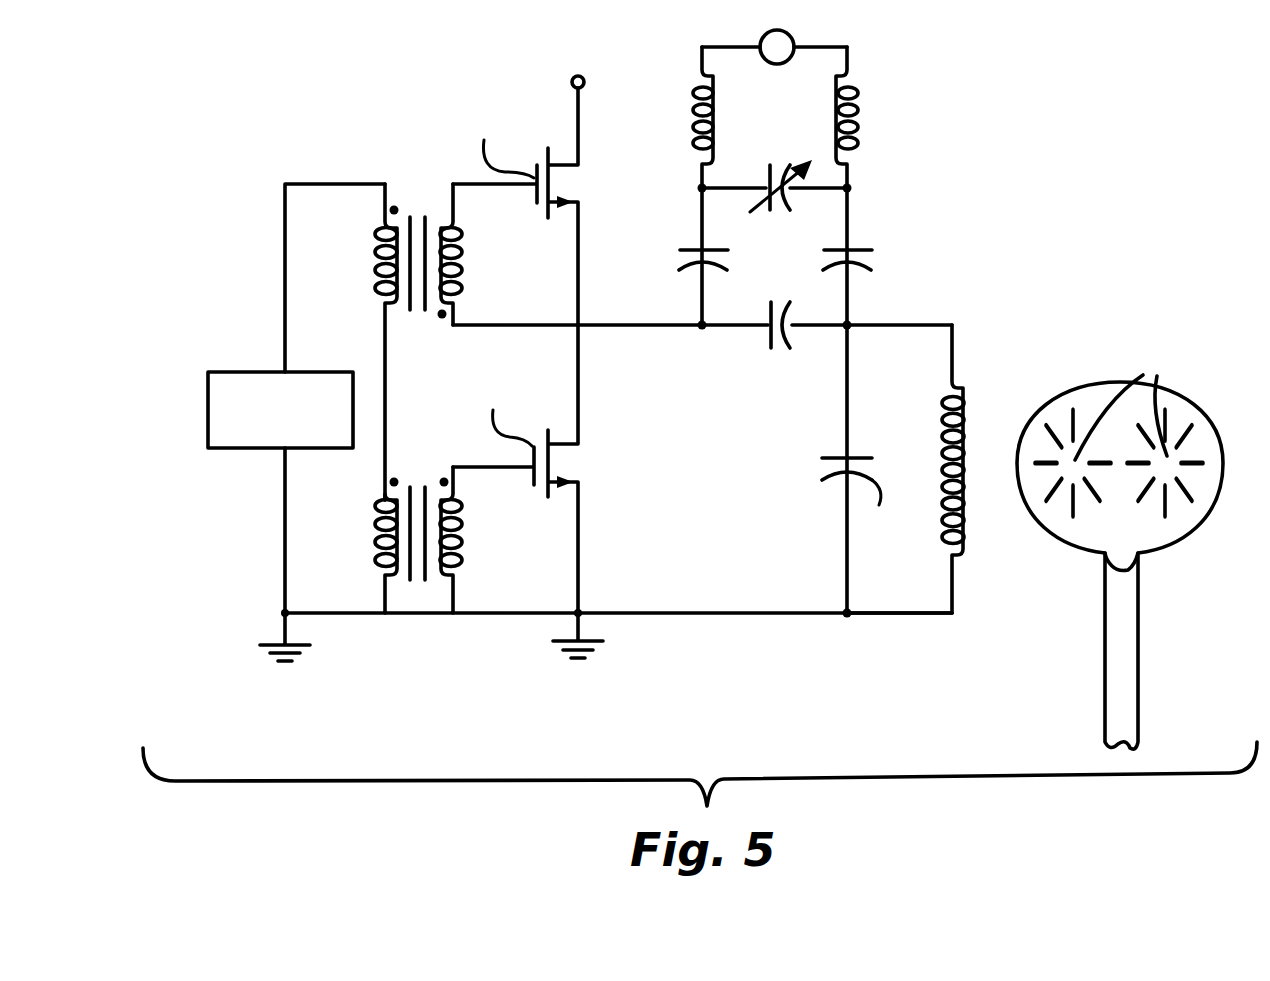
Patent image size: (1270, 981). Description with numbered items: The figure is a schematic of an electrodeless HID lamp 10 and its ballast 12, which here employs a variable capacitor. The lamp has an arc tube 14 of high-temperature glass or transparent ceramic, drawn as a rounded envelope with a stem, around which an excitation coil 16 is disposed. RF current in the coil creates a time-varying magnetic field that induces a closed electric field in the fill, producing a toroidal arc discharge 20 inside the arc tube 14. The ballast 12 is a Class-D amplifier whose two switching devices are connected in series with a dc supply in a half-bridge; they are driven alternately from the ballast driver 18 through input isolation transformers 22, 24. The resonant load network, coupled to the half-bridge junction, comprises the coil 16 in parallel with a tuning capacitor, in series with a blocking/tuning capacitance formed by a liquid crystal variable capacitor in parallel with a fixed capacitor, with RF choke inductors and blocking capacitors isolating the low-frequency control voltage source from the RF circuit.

The electrodeless HID lamp 10 is at (1060, 233).
The ballast 12 is at (252, 250).
The arc tube 14 is at (1190, 540).
The excitation coil 16 is at (976, 398).
The ballast driver 18 is at (264, 450).
The toroidal arc discharge 20 is at (1158, 377).
The input isolation transformer 22 is at (424, 215).
The input isolation transformer 24 is at (397, 588).